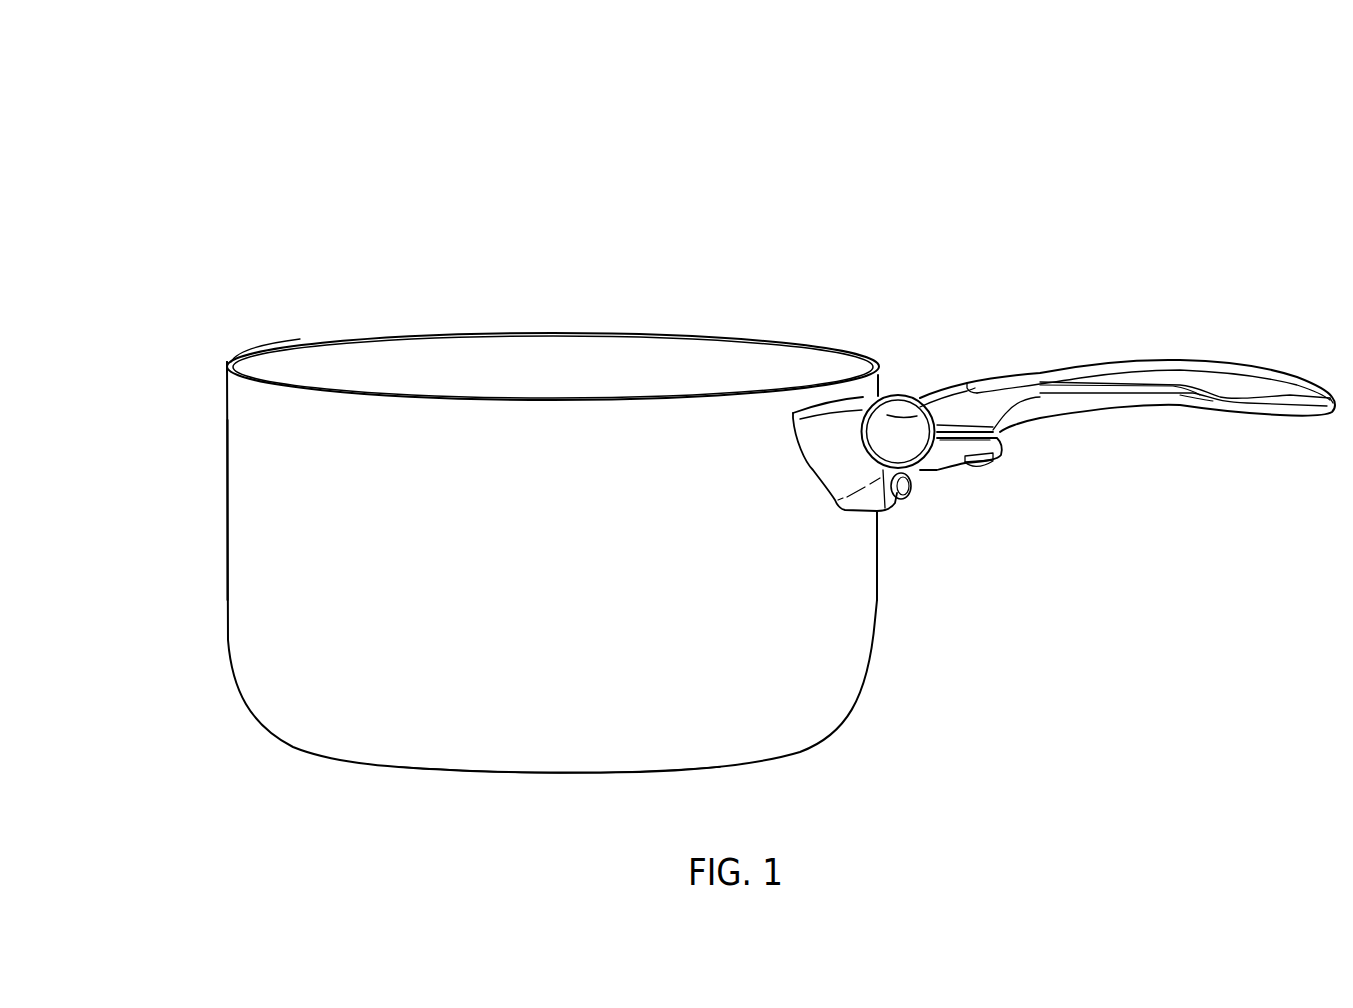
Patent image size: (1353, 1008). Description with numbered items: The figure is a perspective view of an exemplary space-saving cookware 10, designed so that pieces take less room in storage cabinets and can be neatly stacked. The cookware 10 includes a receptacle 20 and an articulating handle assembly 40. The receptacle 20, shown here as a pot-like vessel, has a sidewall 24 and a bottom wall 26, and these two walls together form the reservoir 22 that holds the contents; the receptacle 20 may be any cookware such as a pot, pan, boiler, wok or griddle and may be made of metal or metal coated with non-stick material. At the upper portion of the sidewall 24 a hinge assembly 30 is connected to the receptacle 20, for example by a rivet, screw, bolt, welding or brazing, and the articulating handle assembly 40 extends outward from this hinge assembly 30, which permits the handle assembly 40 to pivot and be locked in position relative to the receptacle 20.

The cookware 10 is at (841, 137).
The receptacle 20 is at (515, 333).
The reservoir 22 is at (447, 365).
The sidewall 24 is at (227, 492).
The bottom wall 26 is at (450, 772).
The hinge assembly 30 is at (838, 480).
The articulating handle assembly 40 is at (1157, 345).